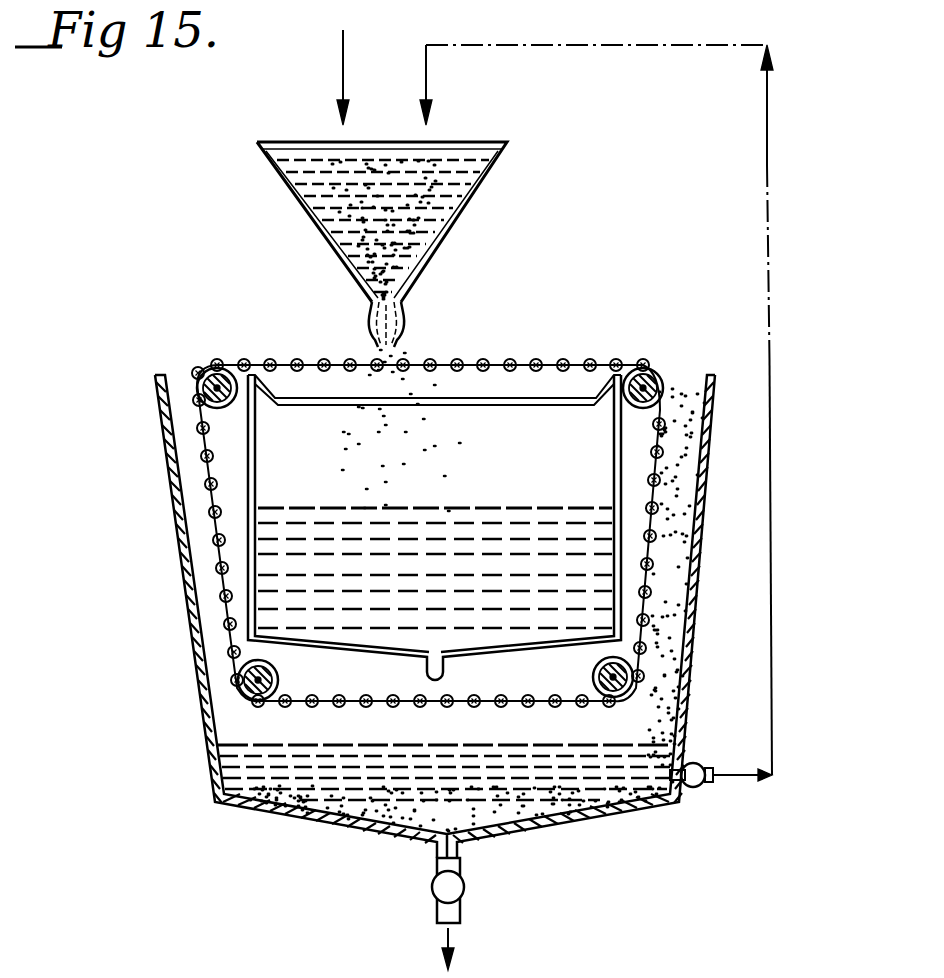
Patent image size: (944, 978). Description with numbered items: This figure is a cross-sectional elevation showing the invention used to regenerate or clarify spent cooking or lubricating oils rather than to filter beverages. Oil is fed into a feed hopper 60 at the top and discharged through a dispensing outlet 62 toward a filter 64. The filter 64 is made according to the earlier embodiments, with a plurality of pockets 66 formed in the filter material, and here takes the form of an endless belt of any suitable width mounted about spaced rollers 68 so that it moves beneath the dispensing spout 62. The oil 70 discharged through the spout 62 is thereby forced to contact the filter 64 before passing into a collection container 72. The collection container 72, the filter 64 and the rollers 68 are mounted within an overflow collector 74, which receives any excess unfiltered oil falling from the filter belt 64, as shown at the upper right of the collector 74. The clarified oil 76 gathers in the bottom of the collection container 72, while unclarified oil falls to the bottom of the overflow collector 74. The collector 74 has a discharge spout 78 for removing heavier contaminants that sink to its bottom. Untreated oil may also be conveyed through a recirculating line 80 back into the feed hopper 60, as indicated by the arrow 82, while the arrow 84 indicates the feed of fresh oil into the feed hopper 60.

The feed hopper 60 is at (470, 211).
The dispensing outlet 62 is at (377, 345).
The filter 64 is at (574, 349).
The pockets 66 is at (552, 360).
The rollers 68 is at (664, 372).
The oil 70 is at (456, 163).
The collection container 72 is at (622, 518).
The overflow collector 74 is at (694, 612).
The clarified oil 76 is at (310, 526).
The discharge spout 78 is at (452, 912).
The recirculating line 80 is at (775, 350).
The arrow 82 is at (426, 72).
The arrow 84 is at (347, 50).